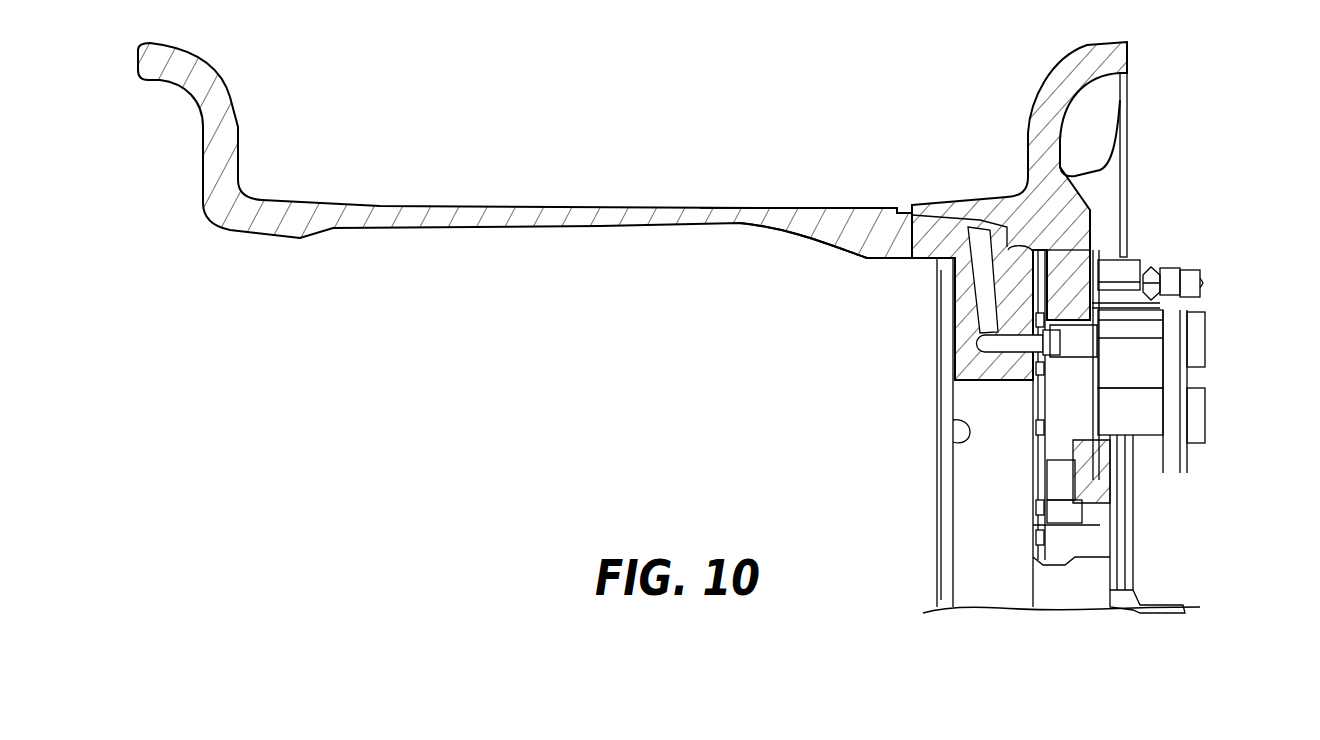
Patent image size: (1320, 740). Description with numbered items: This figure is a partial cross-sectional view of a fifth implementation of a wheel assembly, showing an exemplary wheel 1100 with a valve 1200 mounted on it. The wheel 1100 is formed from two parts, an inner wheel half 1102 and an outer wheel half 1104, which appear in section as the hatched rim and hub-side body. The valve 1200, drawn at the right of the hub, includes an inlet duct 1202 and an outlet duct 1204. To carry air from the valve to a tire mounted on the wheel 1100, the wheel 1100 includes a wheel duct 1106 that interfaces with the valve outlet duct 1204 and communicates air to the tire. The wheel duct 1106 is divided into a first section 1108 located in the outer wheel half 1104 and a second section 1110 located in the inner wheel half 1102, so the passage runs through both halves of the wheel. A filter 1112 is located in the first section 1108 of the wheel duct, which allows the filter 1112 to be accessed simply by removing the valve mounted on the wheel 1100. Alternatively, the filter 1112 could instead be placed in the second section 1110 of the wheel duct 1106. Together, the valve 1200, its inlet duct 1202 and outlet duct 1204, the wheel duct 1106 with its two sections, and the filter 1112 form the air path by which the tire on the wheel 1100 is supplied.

The wheel 1100 is at (613, 174).
The inner wheel half 1102 is at (813, 208).
The outer wheel half 1104 is at (1112, 143).
The wheel duct 1106 is at (975, 345).
The first section of wheel duct 1108 is at (1066, 320).
The second section of wheel duct 1110 is at (957, 265).
The filter 1112 is at (977, 423).
The valve 1200 is at (1127, 272).
The inlet duct 1202 is at (1130, 400).
The outlet duct 1204 is at (1137, 342).